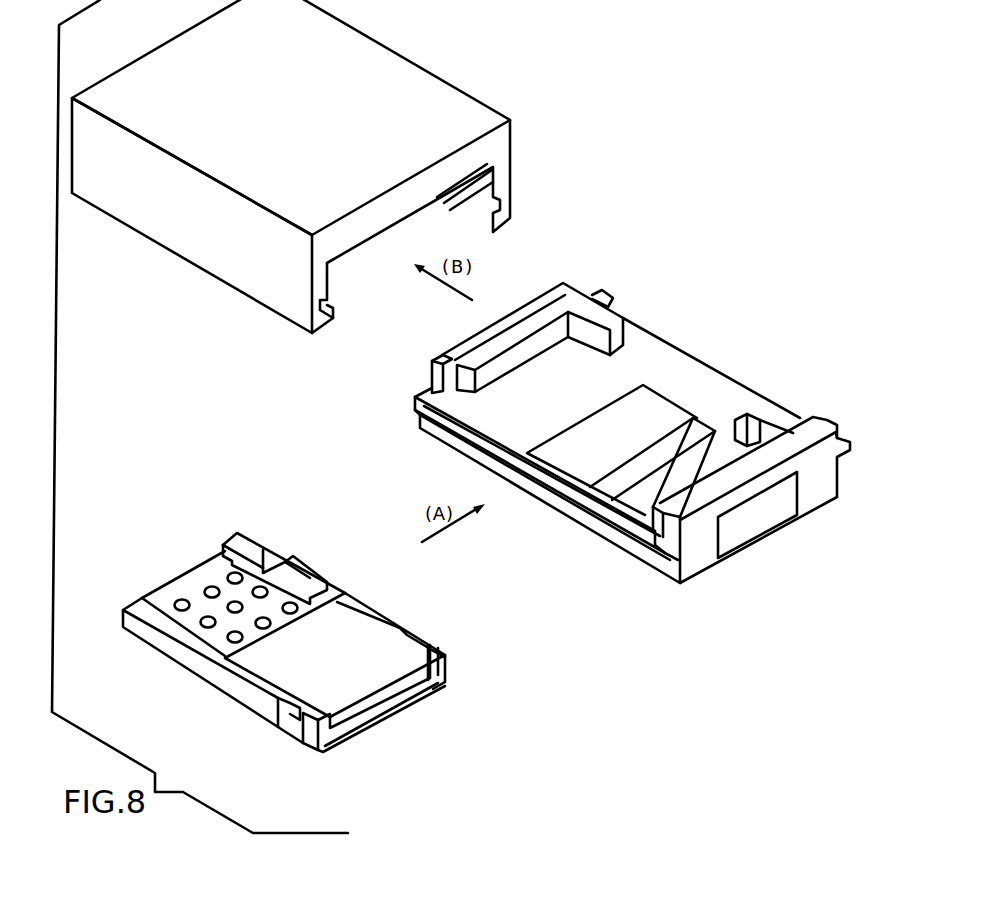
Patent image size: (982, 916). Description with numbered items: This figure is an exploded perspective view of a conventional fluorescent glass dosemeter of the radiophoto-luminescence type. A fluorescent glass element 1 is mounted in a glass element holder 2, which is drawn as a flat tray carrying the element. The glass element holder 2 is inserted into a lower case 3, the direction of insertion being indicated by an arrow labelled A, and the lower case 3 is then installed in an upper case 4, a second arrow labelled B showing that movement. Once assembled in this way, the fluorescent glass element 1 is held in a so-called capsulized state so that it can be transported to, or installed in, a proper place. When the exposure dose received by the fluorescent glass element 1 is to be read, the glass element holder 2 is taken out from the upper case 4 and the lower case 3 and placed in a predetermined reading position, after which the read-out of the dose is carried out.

The fluorescent glass element 1 is at (390, 692).
The glass element holder 2 is at (210, 680).
The lower case 3 is at (760, 528).
The upper case 4 is at (172, 247).